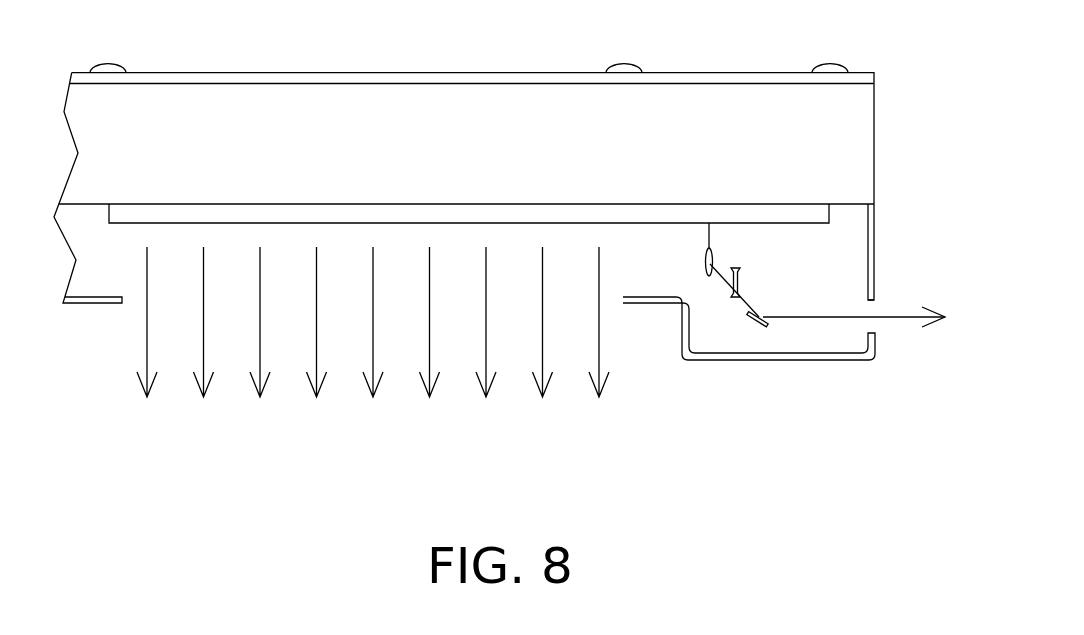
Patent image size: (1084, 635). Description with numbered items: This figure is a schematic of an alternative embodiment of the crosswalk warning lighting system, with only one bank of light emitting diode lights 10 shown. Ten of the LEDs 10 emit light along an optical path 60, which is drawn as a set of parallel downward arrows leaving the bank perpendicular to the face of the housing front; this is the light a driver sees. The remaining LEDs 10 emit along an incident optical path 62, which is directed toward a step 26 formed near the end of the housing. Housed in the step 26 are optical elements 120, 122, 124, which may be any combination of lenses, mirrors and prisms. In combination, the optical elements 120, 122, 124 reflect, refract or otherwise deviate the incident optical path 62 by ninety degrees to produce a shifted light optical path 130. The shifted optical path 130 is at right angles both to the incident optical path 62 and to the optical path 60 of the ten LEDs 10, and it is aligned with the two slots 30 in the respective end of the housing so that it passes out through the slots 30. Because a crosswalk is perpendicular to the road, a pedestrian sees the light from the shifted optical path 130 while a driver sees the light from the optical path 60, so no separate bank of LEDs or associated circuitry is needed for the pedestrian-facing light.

The light emitting diode lights 10 is at (465, 213).
The incident optical path 62 is at (710, 237).
The optical element 120 is at (705, 259).
The optical element 122 is at (735, 297).
The optical element 124 is at (753, 324).
The shifted light optical path 130 is at (822, 317).
The step 26 is at (852, 363).
The slots 30 is at (870, 309).
The optical path 60 is at (615, 435).